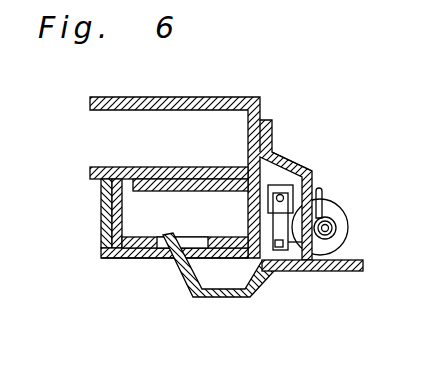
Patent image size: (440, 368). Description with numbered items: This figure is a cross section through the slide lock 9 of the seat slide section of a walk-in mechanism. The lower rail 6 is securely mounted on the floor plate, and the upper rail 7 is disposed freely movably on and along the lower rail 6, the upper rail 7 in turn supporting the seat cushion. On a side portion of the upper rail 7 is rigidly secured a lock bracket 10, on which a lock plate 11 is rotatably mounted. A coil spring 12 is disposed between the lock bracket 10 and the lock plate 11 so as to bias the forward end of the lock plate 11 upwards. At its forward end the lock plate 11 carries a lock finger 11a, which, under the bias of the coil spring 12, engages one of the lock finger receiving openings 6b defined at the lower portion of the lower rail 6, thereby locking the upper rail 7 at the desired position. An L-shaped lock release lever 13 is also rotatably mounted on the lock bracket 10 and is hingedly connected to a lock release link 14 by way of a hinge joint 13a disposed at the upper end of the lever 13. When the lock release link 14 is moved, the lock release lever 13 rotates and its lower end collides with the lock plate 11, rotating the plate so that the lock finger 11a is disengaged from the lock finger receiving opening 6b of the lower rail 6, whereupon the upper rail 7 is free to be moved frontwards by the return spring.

The lower rail 6 is at (100, 248).
The lock finger receiving opening 6b is at (158, 258).
The upper rail 7 is at (92, 173).
The slide lock 9 is at (289, 122).
The lock bracket 10 is at (320, 180).
The lock plate 11 is at (356, 272).
The lock finger 11a is at (177, 268).
The coil spring 12 is at (343, 214).
The lock release lever 13 is at (277, 272).
The hinge joint 13a is at (279, 195).
The lock release link 14 is at (308, 172).